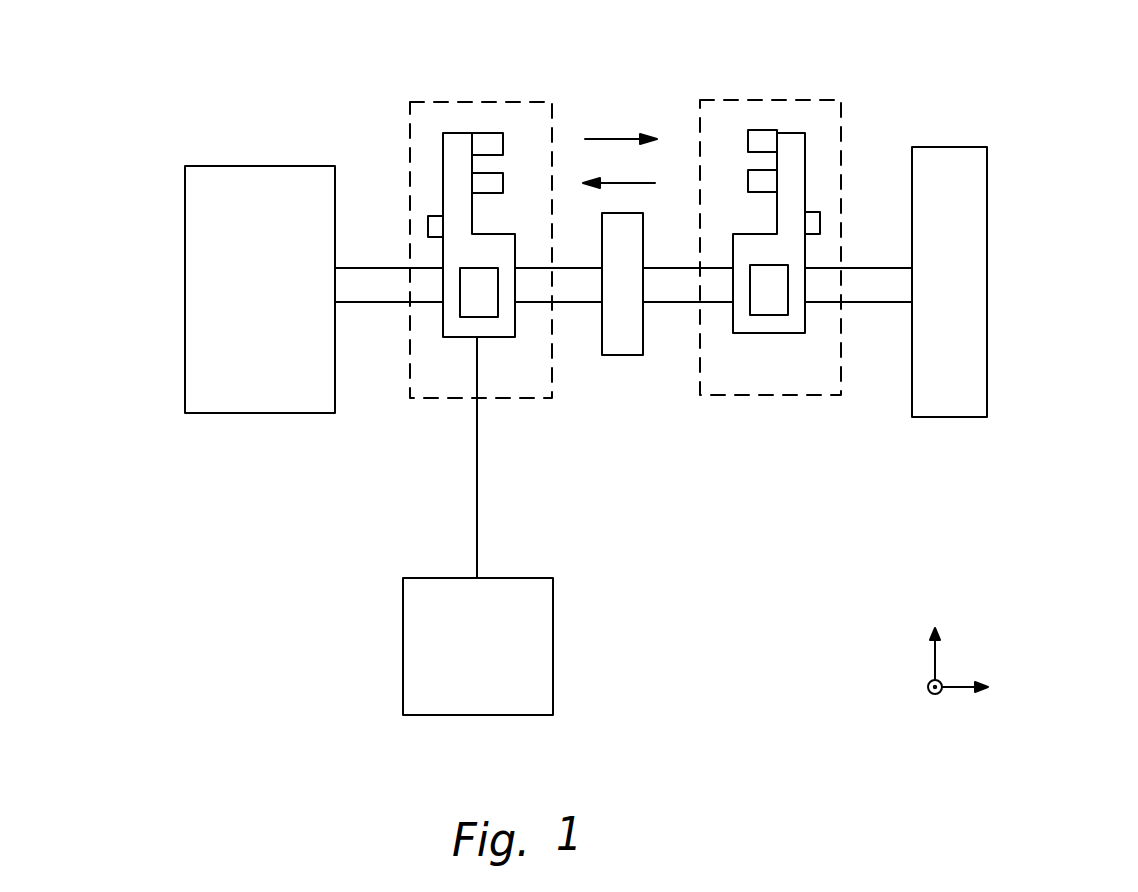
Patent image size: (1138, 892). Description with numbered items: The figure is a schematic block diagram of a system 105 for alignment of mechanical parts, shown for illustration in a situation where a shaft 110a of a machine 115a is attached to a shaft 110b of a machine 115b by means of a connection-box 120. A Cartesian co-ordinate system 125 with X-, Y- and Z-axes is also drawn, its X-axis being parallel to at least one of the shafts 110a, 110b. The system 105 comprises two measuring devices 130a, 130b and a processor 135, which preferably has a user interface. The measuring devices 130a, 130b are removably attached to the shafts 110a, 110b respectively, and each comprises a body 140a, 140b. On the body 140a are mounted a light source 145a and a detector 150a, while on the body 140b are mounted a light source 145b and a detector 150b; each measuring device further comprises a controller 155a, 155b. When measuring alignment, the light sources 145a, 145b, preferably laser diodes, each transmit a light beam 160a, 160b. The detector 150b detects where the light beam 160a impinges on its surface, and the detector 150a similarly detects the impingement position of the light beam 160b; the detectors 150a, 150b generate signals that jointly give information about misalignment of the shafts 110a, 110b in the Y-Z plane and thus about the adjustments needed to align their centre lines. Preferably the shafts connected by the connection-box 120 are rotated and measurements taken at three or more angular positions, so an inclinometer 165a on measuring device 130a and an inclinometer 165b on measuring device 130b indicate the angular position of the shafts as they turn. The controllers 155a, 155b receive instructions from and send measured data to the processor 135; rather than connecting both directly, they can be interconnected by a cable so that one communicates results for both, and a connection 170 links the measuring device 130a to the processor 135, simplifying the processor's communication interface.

The system 105 is at (757, 560).
The shaft 110a is at (370, 304).
The shaft 110b is at (872, 302).
The machine 115a is at (185, 268).
The machine 115b is at (987, 268).
The connection-box 120 is at (617, 355).
The Cartesian co-ordinate system 125 is at (942, 702).
The measuring device 130a is at (422, 398).
The measuring device 130b is at (810, 395).
The processor 135 is at (403, 657).
The body 140a is at (495, 337).
The body 140b is at (778, 333).
The light source 145a is at (482, 133).
The light source 145b is at (748, 178).
The detector 150a is at (502, 182).
The detector 150b is at (748, 137).
The controller 155a is at (498, 310).
The controller 155b is at (762, 315).
The light beam 160a is at (621, 124).
The light beam 160b is at (619, 171).
The inclinometer 165a is at (428, 228).
The inclinometer 165b is at (878, 160).
The connection 170 is at (477, 537).